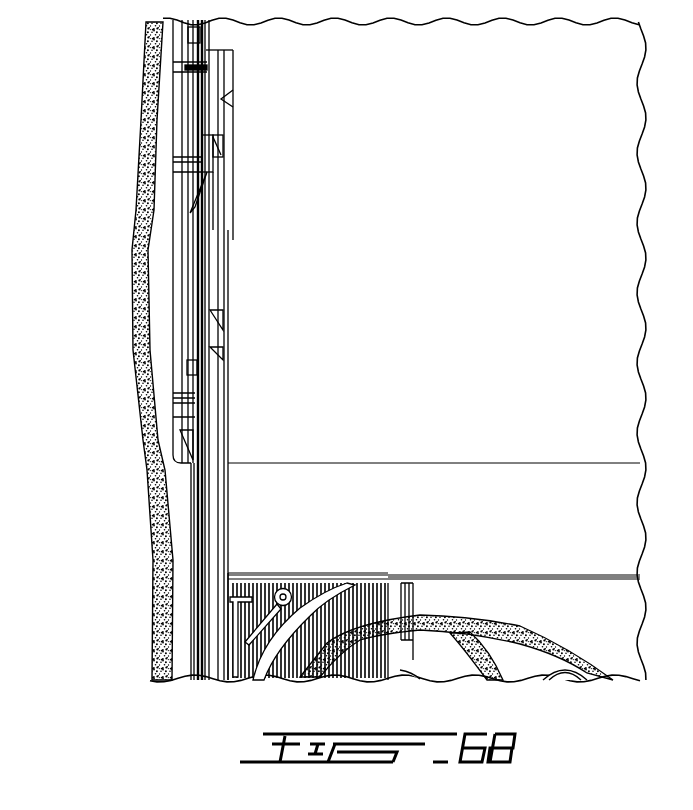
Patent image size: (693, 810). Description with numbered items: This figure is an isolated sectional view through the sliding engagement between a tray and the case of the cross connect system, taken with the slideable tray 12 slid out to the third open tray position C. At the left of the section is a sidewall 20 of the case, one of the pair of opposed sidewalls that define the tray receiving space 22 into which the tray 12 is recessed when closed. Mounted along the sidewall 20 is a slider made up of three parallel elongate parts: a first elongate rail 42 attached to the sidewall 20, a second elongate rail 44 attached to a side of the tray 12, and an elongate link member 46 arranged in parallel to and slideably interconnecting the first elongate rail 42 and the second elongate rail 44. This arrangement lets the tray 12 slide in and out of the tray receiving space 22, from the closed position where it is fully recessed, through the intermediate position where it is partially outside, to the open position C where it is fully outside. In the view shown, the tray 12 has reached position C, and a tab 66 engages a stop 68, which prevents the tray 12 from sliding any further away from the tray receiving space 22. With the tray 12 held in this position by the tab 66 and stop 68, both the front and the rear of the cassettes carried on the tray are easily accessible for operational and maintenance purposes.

The sidewall 20 is at (174, 35).
The first elongate rail 42 is at (193, 284).
The elongate link member 46 is at (212, 477).
The tab 66 is at (207, 152).
The stop 68 is at (200, 186).
The tray receiving space 22 is at (310, 463).
The slideable tray 12 is at (482, 597).
The second elongate rail 44 is at (228, 640).
The third open tray position C is at (617, 573).